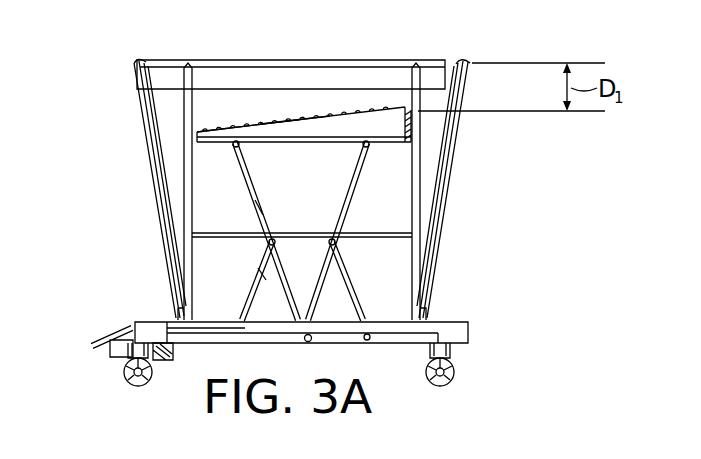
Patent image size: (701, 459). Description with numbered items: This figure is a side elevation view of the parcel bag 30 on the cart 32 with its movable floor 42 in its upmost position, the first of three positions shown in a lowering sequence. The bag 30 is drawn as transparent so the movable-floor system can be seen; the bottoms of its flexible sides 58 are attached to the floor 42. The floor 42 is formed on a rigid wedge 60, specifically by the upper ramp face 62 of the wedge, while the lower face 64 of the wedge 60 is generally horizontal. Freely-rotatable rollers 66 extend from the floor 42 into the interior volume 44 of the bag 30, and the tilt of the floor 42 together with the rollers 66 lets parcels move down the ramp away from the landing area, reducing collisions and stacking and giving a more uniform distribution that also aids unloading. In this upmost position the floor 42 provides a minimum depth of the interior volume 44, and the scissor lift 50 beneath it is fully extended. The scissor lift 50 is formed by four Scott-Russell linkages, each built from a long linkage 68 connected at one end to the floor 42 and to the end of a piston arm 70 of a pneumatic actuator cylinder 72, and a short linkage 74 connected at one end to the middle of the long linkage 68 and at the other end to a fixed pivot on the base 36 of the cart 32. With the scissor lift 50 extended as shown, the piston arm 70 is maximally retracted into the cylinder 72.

The cart 32 is at (131, 48).
The bag 30 is at (172, 128).
The floor 42 is at (368, 112).
The flexible sides 58 is at (210, 213).
The lower face 64 is at (388, 140).
The wedge 60 is at (397, 128).
The rollers 66 is at (323, 117).
The upper ramp face 62 is at (277, 127).
The interior volume 44 is at (293, 98).
The scissor lift 50 is at (338, 259).
The long linkage 68 is at (263, 213).
The short linkage 74 is at (262, 273).
The base 36 is at (458, 332).
The pneumatic actuator cylinder 72 is at (228, 340).
The piston arm 70 is at (311, 345).